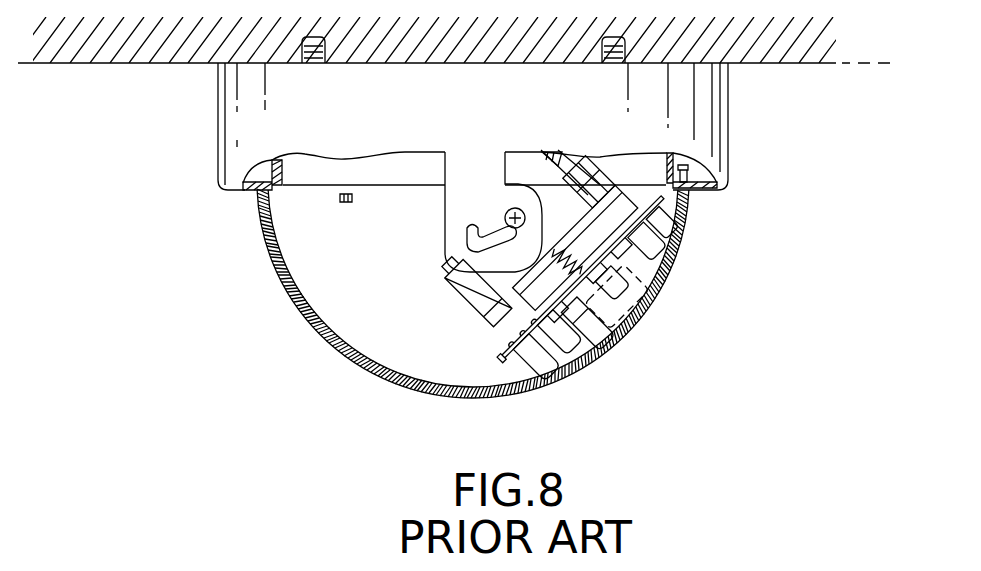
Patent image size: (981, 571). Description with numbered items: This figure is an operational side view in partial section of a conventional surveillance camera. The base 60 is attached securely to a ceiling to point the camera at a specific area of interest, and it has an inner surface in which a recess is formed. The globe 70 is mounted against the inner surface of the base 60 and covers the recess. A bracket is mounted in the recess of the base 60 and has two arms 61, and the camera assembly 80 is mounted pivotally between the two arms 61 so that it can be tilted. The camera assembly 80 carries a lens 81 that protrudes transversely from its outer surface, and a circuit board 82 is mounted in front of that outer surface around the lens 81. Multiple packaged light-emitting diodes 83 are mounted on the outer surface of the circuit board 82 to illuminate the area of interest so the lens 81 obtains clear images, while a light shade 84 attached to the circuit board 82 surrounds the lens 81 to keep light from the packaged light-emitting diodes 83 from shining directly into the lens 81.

The base 60 is at (232, 133).
The arms 61 is at (460, 212).
The globe 70 is at (270, 259).
The camera assembly 80 is at (503, 284).
The lens 81 is at (670, 280).
The circuit board 82 is at (500, 352).
The packaged light-emitting diodes 83 is at (543, 368).
The light shade 84 is at (603, 338).